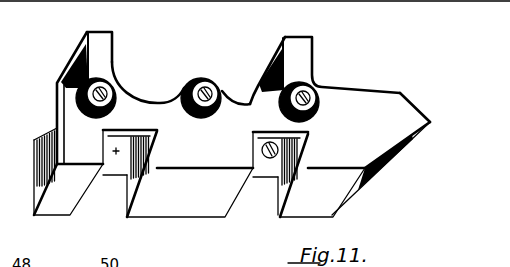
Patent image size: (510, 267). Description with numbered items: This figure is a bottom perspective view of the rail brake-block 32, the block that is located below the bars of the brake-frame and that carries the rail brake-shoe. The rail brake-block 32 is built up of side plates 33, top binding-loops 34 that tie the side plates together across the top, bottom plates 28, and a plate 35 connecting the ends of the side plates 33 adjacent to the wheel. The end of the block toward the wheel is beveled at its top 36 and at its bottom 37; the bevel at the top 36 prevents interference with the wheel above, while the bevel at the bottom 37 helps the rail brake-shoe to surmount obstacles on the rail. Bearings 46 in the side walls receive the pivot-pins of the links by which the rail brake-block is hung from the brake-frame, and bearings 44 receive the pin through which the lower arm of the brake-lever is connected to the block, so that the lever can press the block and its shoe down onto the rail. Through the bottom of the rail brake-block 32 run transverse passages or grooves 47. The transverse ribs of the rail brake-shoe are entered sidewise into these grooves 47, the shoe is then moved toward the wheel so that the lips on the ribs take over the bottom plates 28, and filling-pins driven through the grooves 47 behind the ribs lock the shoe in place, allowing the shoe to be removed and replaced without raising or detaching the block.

The bottom plates 28 is at (75, 183).
The rail brake-block 32 is at (204, 218).
The side plates 33 is at (37, 165).
The top binding-loops 34 is at (104, 58).
The plate 35 is at (395, 168).
The top of the end of the rail brake-block 36 is at (414, 106).
The bottom of the end of the rail brake-block 37 is at (403, 165).
The bearings 44 is at (198, 87).
The bearings 46 is at (83, 104).
The transverse passages or grooves 47 is at (110, 198).